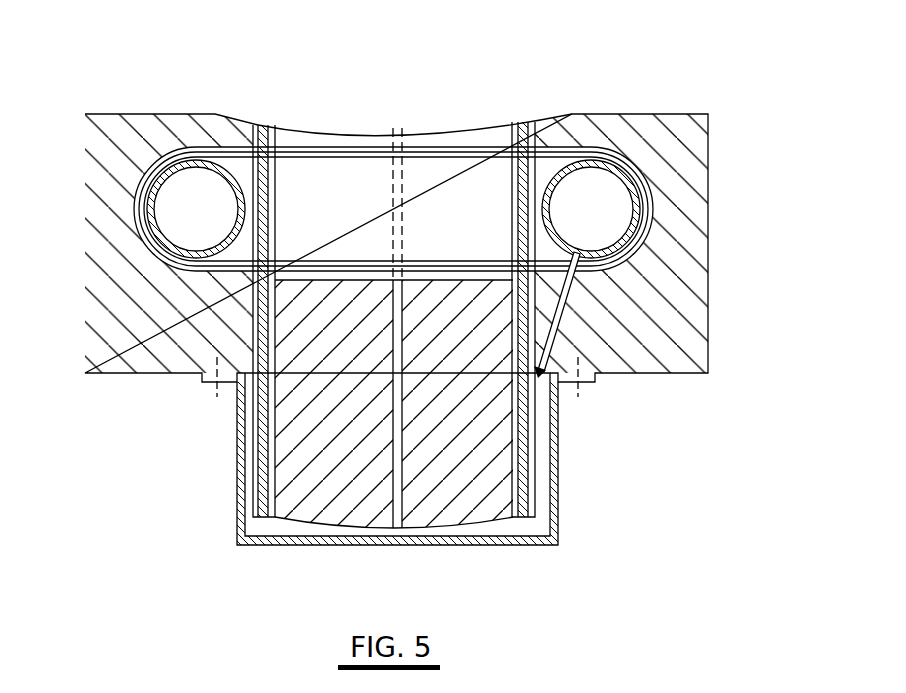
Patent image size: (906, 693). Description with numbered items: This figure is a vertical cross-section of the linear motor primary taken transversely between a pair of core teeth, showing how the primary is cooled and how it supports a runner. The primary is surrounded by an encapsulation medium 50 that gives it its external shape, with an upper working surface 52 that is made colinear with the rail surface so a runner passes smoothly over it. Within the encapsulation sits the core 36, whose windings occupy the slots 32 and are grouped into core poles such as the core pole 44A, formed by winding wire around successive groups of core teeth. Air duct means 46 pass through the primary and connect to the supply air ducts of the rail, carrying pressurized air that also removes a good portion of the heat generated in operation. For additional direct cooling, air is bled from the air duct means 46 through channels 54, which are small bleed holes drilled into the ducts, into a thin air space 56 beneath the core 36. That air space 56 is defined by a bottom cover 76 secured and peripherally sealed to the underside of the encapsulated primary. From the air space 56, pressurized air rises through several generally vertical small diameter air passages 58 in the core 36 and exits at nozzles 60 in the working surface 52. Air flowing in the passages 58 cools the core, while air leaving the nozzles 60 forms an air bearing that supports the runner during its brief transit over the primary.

The encapsulation medium 50 is at (107, 151).
The working surface 52 is at (450, 128).
The core pole 44A is at (643, 168).
The air duct means 46 is at (167, 223).
The slots 32 is at (290, 160).
The nozzles 60 is at (397, 128).
The core 36 is at (297, 449).
The air passages 58 is at (403, 481).
The channels 54 is at (587, 320).
The air space 56 is at (255, 527).
The bottom cover 76 is at (562, 448).